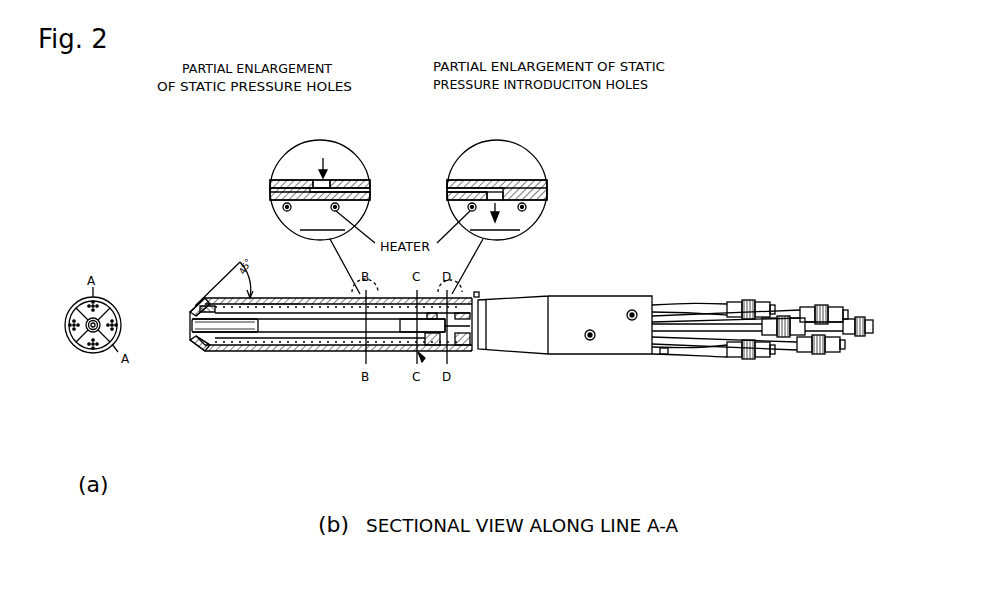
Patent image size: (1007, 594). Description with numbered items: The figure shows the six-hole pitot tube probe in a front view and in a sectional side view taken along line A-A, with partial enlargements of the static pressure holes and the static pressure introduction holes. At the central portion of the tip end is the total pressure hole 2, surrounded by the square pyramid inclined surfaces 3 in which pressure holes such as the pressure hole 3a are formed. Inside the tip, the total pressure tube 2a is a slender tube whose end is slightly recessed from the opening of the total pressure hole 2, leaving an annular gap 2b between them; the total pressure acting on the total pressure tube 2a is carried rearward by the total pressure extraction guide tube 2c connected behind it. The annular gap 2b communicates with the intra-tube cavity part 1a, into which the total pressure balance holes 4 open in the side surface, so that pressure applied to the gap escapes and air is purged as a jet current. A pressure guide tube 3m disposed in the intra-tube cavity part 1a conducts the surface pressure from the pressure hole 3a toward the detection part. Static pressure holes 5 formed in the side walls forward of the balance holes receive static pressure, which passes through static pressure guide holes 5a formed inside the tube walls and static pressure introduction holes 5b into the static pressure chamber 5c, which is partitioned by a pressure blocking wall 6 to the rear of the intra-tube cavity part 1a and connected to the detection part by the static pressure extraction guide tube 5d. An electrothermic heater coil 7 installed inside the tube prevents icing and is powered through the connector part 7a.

The intra-tube cavity part 1a is at (292, 351).
The total pressure hole 2 is at (108, 320).
The total pressure tube 2a is at (201, 300).
The annular gap 2b is at (194, 342).
The total pressure extraction guide tube 2c is at (474, 356).
The square pyramid inclined surfaces 3 is at (80, 343).
The pressure hole 3a is at (100, 304).
The pressure guide tube 3m is at (274, 290).
The total pressure balance holes 4 is at (412, 352).
The static pressure holes 5 is at (318, 181).
The static pressure guide holes 5a is at (343, 190).
The static pressure introduction holes 5b is at (505, 196).
The static pressure chamber 5c is at (445, 352).
The static pressure extraction guide tube 5d is at (460, 352).
The pressure blocking wall 6 is at (432, 352).
The electrothermic heater coil 7 is at (256, 351).
The connector part 7a is at (690, 358).